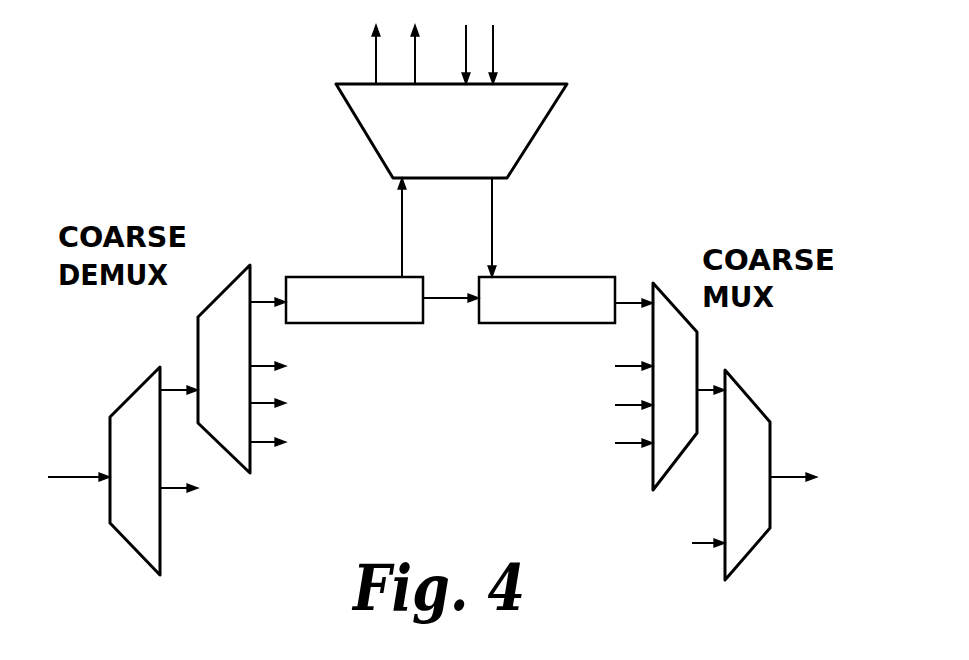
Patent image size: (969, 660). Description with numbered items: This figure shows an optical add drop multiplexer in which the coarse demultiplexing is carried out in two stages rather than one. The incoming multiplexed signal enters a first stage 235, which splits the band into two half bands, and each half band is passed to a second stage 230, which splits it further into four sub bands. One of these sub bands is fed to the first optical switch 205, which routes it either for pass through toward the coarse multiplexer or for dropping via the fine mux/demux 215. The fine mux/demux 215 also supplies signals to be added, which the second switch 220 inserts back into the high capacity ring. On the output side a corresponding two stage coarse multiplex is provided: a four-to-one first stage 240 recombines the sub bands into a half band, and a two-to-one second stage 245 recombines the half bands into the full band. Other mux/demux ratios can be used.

The first optical switch 205 is at (382, 312).
The fine mux/demux 215 is at (372, 122).
The second switch 220 is at (543, 312).
The second stage 230 is at (238, 447).
The first stage 235 is at (147, 543).
The 4-1 first stage 240 is at (662, 457).
The 2-1 second stage 245 is at (733, 550).